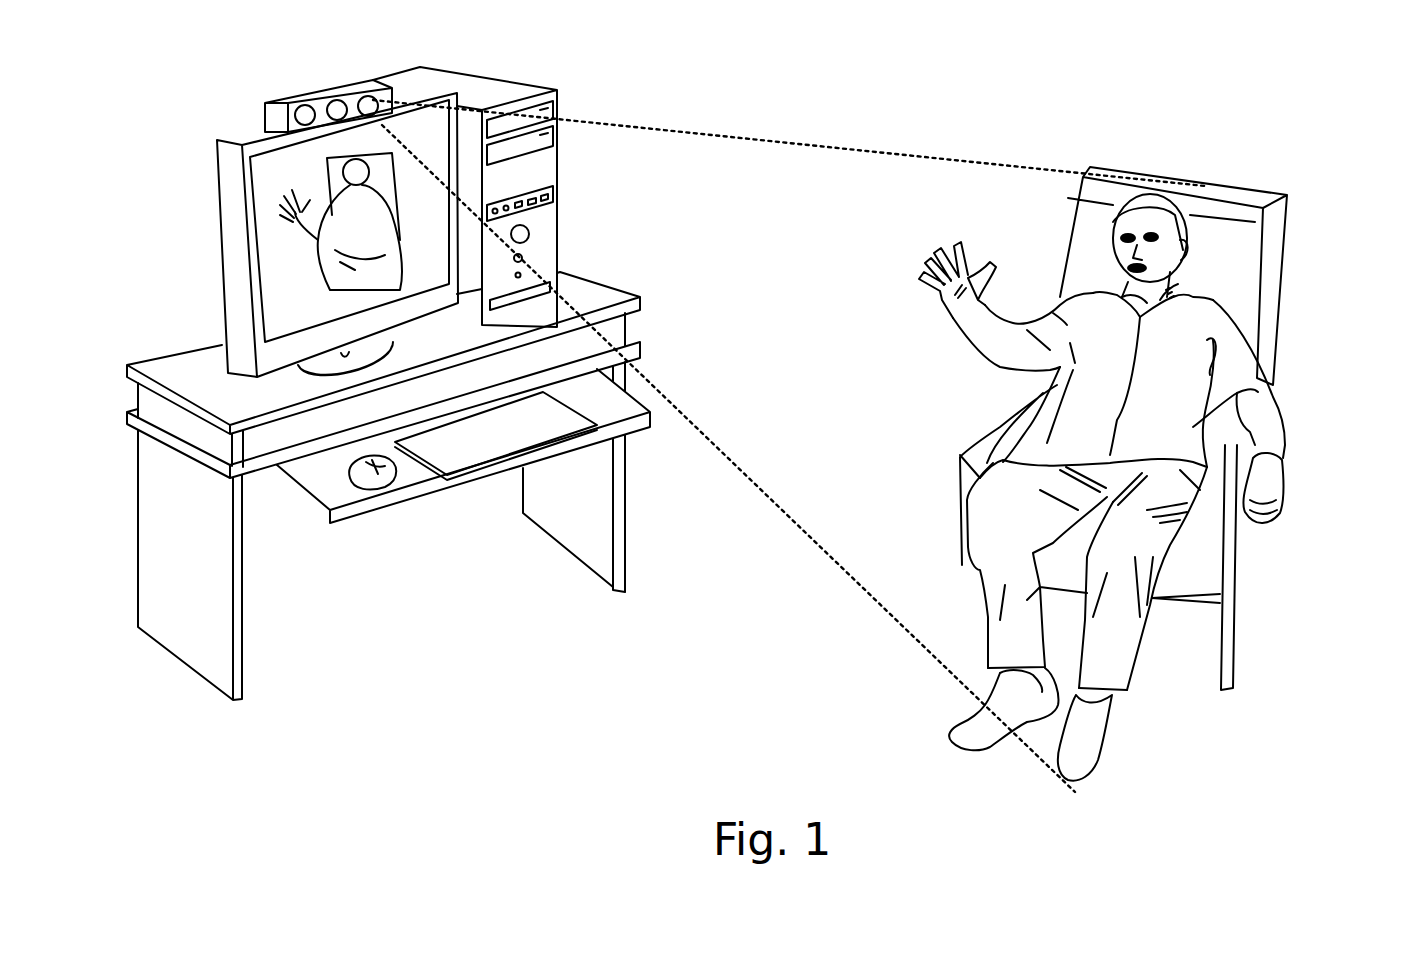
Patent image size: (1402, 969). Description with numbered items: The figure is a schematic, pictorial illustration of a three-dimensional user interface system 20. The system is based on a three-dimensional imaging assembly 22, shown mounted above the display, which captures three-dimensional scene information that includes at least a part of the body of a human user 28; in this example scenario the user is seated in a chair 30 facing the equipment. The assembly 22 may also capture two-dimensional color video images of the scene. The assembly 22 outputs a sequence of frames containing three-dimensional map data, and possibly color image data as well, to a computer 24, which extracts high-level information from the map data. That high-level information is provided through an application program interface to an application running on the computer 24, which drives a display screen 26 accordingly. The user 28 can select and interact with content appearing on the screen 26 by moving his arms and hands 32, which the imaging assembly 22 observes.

The 3D user interface system 20 is at (633, 98).
The 3D imaging assembly 22 is at (288, 100).
The computer 24 is at (558, 222).
The display screen 26 is at (277, 313).
The human user 28 is at (1173, 210).
The chair 30 is at (1287, 283).
The hands 32 is at (937, 248).